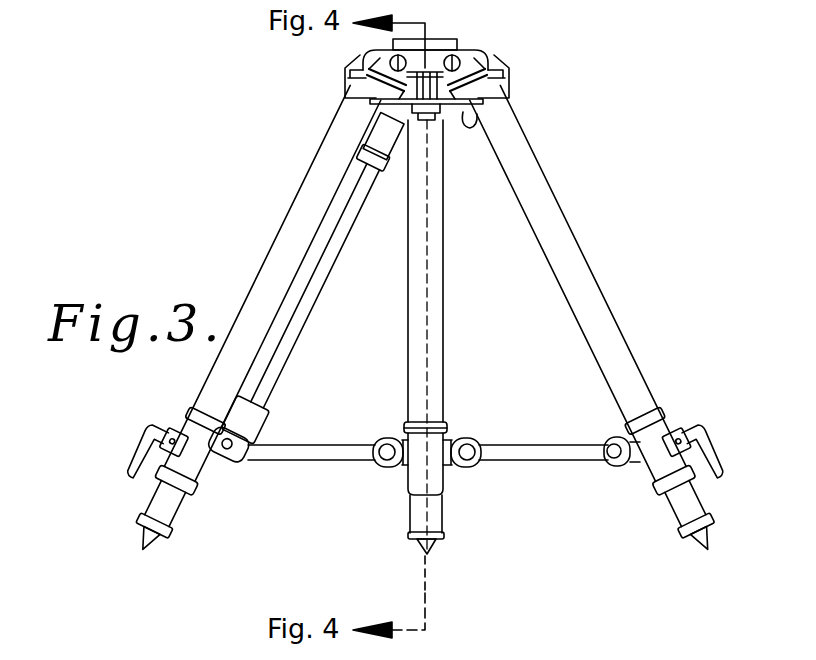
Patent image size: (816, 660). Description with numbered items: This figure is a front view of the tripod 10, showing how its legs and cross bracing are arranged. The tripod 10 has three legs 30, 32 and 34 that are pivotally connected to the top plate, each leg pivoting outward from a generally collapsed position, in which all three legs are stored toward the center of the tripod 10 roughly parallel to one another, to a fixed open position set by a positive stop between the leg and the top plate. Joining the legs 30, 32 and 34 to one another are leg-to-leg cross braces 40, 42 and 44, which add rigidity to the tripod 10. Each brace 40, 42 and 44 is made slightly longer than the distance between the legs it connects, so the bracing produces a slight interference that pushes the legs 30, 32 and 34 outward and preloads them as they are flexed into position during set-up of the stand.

The tripod 10 is at (230, 119).
The leg 30 is at (430, 323).
The leg 32 is at (537, 198).
The leg 34 is at (312, 202).
The brace 40 is at (308, 450).
The brace 42 is at (567, 450).
The brace 44 is at (302, 319).